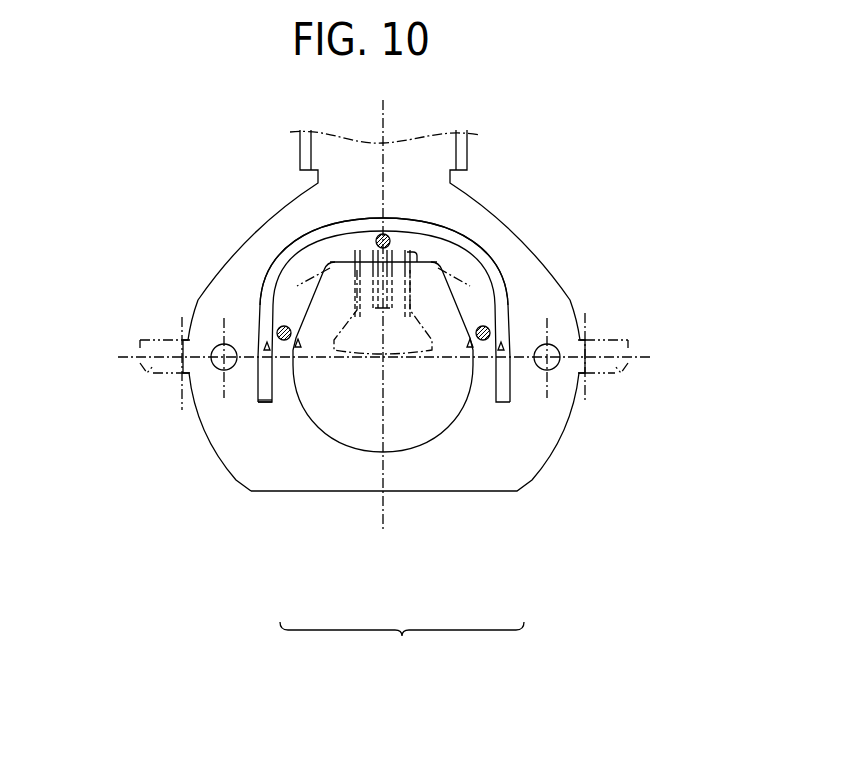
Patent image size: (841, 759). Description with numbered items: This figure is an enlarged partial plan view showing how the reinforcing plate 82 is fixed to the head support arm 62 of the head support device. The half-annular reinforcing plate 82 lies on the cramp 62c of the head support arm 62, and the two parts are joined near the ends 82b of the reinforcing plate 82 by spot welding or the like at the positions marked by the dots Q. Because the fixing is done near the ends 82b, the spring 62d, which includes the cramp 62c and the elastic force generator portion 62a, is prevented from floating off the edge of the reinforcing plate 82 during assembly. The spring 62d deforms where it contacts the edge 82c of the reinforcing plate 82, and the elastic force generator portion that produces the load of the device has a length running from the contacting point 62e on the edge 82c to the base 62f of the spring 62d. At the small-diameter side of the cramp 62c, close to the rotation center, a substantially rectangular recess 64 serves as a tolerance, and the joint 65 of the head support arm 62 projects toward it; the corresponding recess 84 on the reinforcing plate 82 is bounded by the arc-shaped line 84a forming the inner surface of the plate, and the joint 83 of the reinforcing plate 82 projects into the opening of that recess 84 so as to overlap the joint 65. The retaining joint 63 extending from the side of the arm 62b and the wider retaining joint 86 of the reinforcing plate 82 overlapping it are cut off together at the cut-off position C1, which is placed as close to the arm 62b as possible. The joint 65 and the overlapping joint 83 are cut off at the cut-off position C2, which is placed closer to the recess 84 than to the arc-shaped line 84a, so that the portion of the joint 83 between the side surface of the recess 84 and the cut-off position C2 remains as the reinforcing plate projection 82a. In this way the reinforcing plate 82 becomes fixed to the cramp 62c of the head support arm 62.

The head support arm 62 is at (420, 175).
The elastic force generator portion 62a is at (292, 370).
The arm 62b is at (510, 243).
The cramp 62c is at (472, 300).
The spring 62d is at (402, 647).
The contacting point 62e is at (226, 482).
The base 62f is at (275, 398).
The retaining joint 63 is at (183, 372).
The recess 64 is at (392, 257).
The joint 65 is at (405, 287).
The reinforcing plate 82 is at (293, 297).
The reinforcing plate projection 82a is at (355, 253).
The ends of reinforcing plate 82b is at (268, 360).
The edge of reinforcing plate 82c is at (262, 400).
The joint 83 is at (355, 262).
The recess 84 is at (410, 259).
The arc-shaped line 84a is at (417, 273).
The retaining joint 86 is at (153, 340).
The dots Q is at (284, 341).
The cut-off position C1 is at (384, 379).
The cut-off position C2 is at (510, 243).